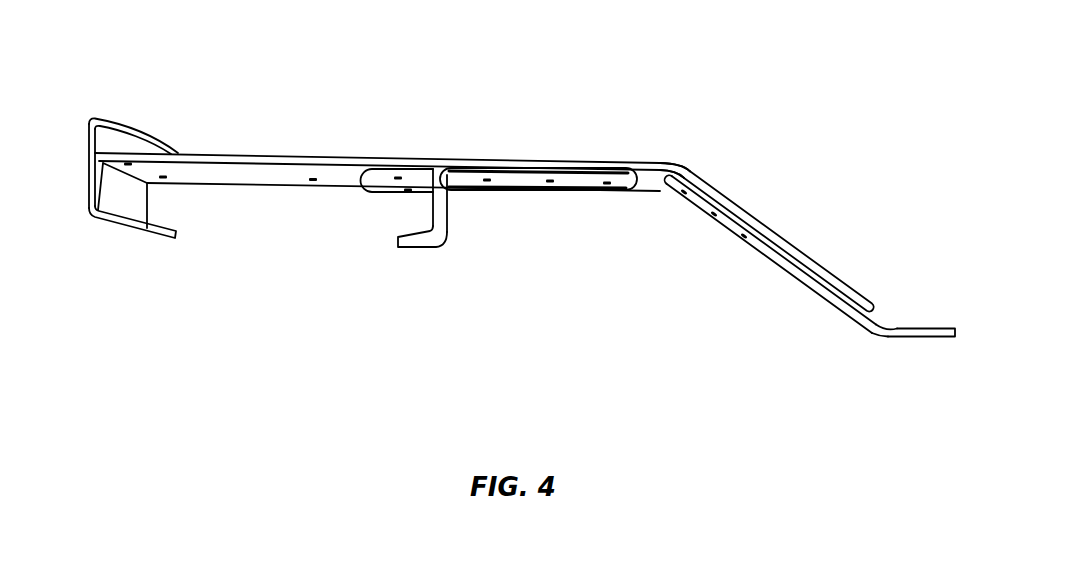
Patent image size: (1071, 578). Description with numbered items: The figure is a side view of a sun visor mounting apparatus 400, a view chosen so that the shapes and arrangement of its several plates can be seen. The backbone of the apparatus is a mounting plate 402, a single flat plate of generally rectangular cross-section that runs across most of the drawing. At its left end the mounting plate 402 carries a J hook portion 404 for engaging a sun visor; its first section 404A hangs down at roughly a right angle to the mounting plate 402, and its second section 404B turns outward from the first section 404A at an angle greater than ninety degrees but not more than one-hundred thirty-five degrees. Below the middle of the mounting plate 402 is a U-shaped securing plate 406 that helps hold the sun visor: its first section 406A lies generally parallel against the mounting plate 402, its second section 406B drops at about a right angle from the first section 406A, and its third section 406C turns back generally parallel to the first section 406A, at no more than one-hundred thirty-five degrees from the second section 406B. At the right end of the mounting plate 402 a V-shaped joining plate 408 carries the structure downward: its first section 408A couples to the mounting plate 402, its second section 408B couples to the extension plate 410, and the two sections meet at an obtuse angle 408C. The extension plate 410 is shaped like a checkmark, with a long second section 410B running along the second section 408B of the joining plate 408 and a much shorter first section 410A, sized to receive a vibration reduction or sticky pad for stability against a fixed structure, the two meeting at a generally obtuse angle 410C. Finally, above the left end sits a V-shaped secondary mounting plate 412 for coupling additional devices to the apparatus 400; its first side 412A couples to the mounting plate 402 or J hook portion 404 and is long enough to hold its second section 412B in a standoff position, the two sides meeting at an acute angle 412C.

The sun visor mounting apparatus 400 is at (238, 393).
The mounting plate 402 is at (271, 153).
The J hook portion 404 is at (179, 240).
The first section 404A is at (132, 199).
The second section 404B is at (172, 240).
The securing plate 406 is at (435, 212).
The first section 406A is at (391, 168).
The second section 406B is at (448, 211).
The third section 406C is at (413, 249).
The joining plate 408 is at (723, 209).
The first section 408A is at (650, 161).
The second section 408B is at (763, 221).
The obtuse angle 408C is at (659, 190).
The extension plate 410 is at (827, 288).
The first section 410A is at (927, 338).
The second section 410B is at (745, 243).
The angle 410C is at (901, 319).
The secondary mounting plate 412 is at (160, 170).
The first side 412A is at (88, 150).
The second section 412B is at (126, 117).
The acute angle 412C is at (116, 139).